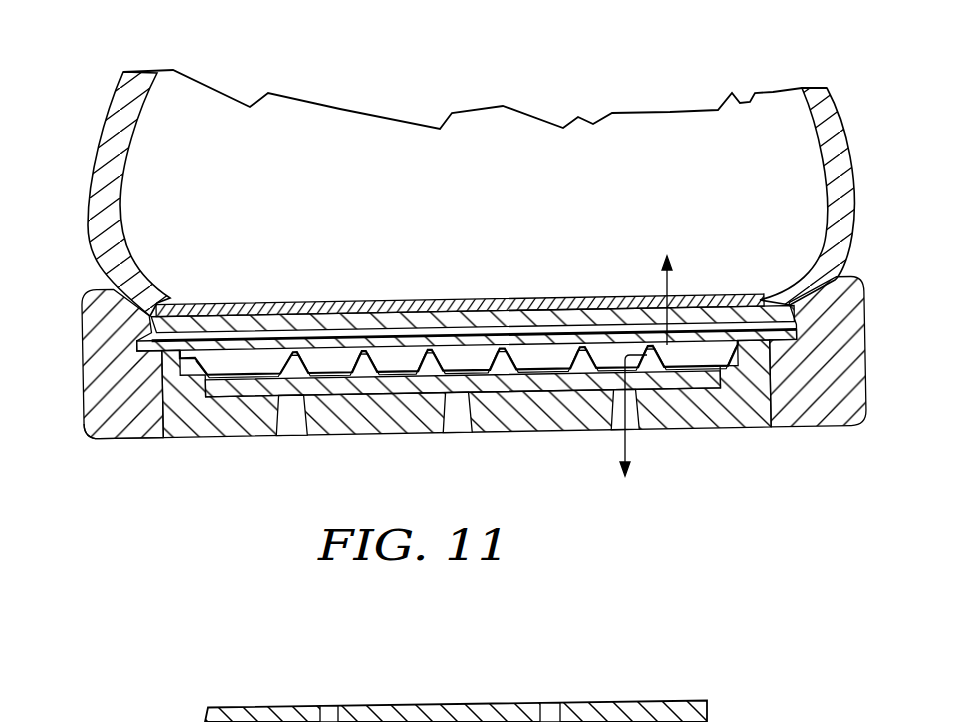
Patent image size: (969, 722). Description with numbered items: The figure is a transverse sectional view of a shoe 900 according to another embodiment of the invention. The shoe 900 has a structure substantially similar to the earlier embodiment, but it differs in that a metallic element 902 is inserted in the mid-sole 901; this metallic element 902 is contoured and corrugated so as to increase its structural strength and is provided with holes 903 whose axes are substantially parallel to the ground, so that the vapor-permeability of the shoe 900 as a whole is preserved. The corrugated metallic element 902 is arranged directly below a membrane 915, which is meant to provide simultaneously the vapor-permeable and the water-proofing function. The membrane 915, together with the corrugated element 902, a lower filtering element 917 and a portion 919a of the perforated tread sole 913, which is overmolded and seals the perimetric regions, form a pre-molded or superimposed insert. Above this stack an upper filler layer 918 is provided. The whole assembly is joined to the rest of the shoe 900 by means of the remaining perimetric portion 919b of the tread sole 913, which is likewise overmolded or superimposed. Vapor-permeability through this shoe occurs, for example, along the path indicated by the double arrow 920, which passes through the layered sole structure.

The shoe 900 is at (100, 96).
The mid-sole 901 is at (450, 392).
The metallic element 902 is at (420, 392).
The holes 903 is at (512, 334).
The tread sole 913 is at (147, 451).
The membrane 915 is at (240, 330).
The lower filtering element 917 is at (526, 386).
The upper filler layer 918 is at (442, 302).
The portion of perforated tread sole 919a is at (198, 426).
The remaining perimetric portion of tread sole 919b is at (817, 425).
The double arrow 920 is at (628, 443).